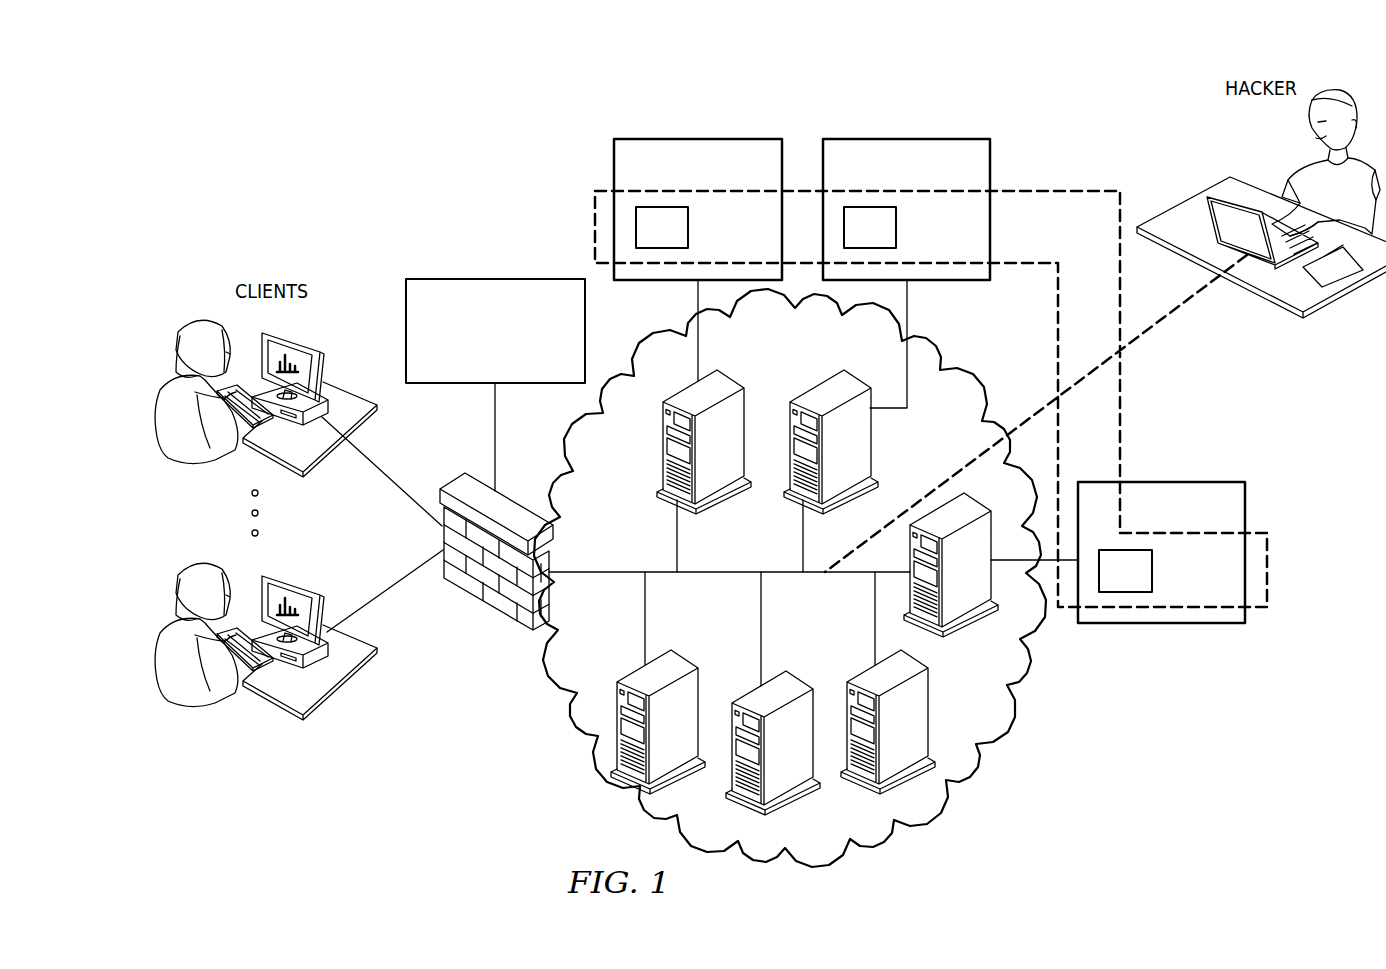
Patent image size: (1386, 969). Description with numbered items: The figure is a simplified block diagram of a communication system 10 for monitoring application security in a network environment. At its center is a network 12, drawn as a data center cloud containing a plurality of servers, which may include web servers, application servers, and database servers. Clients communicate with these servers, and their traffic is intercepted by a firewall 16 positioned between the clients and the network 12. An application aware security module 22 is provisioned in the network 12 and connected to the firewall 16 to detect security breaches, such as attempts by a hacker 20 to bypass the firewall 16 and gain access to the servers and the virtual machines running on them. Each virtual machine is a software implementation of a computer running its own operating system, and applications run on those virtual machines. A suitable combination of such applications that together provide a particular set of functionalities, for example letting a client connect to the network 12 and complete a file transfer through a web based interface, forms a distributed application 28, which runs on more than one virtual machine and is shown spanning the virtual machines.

The communication system 10 is at (530, 116).
The network 12 is at (552, 728).
The firewall 16 is at (494, 597).
The hacker 20 is at (1303, 158).
The application aware security module 22 is at (476, 279).
The distributed application 28 is at (1128, 372).